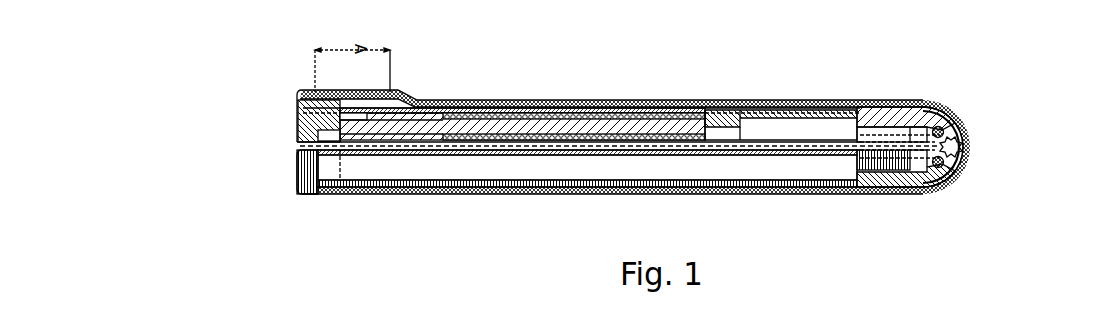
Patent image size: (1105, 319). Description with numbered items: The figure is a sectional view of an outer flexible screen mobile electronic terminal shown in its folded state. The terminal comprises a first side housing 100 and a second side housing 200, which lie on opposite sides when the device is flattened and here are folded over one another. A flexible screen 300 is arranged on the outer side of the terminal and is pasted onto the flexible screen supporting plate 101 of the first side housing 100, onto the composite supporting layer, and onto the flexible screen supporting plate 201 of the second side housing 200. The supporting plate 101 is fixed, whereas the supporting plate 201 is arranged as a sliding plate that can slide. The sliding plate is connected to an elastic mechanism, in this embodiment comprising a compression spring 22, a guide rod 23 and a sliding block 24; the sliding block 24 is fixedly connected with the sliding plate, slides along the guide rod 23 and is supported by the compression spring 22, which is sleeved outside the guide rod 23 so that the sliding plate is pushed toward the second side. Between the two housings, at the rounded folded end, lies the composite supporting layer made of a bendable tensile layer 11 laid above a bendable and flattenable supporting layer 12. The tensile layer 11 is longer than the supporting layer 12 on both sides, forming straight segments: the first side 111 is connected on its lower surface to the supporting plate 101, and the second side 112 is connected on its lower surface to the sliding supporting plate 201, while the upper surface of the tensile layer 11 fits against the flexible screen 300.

The first side housing 100 is at (296, 178).
The flexible screen supporting plate of the first side housing 101 is at (727, 194).
The first side of the tensile layer 111 is at (903, 194).
The second side of the tensile layer 112 is at (905, 99).
The tensile layer 11 is at (968, 131).
The supporting layer 12 is at (970, 147).
The second side housing 200 is at (296, 107).
The flexible screen supporting plate of the second side housing 201 is at (712, 100).
The compression spring 22 is at (615, 100).
The guide rod 23 is at (537, 100).
The sliding block 24 is at (470, 100).
The flexible screen 300 is at (795, 100).